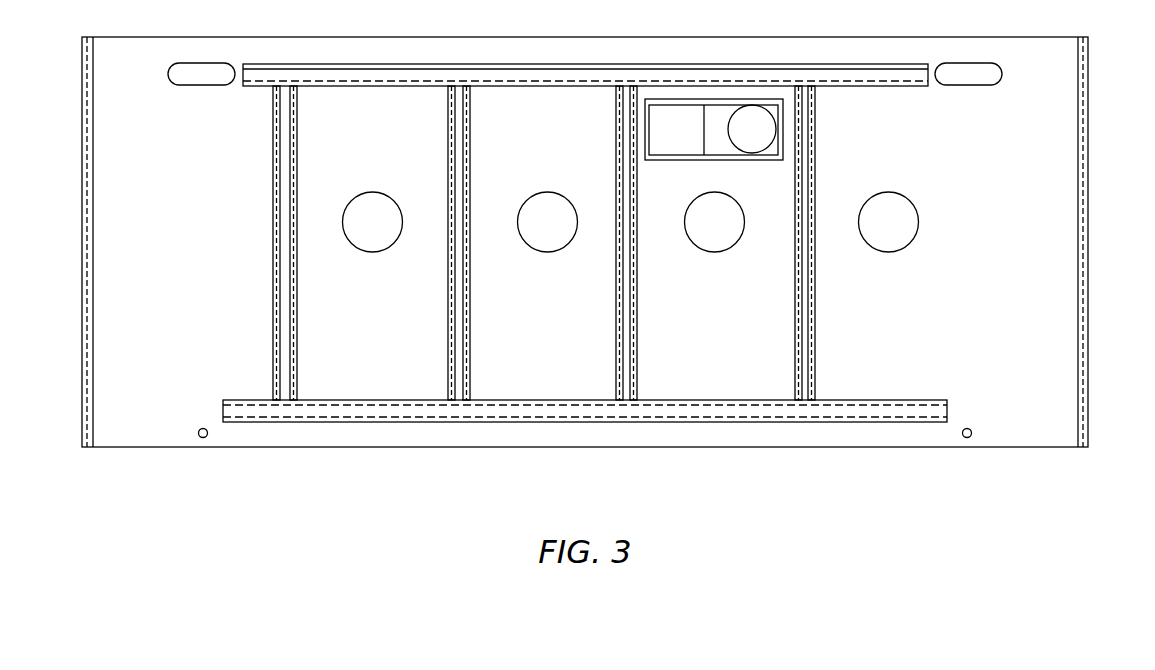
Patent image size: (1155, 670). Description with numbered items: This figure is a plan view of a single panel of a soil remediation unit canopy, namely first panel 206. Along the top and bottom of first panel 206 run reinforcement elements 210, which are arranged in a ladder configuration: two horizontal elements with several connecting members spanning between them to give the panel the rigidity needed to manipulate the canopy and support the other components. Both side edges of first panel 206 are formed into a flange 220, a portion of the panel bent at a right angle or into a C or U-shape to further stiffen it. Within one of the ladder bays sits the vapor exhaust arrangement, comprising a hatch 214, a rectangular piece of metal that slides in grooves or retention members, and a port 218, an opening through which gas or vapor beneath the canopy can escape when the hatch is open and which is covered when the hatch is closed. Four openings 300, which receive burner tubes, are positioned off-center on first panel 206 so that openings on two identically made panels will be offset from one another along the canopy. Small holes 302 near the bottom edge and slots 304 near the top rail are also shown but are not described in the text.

The first panel 206 is at (128, 439).
The reinforcement elements 210 is at (348, 64).
The hatch 214 is at (665, 145).
The port 218 is at (750, 145).
The flange 220 is at (82, 62).
The openings 300 is at (370, 238).
The small hole 302 is at (204, 438).
The slot 304 is at (200, 87).